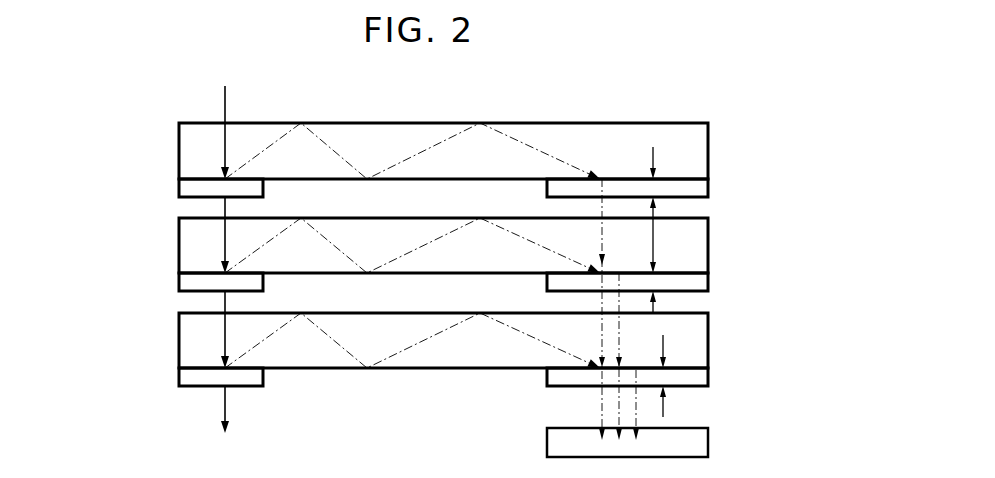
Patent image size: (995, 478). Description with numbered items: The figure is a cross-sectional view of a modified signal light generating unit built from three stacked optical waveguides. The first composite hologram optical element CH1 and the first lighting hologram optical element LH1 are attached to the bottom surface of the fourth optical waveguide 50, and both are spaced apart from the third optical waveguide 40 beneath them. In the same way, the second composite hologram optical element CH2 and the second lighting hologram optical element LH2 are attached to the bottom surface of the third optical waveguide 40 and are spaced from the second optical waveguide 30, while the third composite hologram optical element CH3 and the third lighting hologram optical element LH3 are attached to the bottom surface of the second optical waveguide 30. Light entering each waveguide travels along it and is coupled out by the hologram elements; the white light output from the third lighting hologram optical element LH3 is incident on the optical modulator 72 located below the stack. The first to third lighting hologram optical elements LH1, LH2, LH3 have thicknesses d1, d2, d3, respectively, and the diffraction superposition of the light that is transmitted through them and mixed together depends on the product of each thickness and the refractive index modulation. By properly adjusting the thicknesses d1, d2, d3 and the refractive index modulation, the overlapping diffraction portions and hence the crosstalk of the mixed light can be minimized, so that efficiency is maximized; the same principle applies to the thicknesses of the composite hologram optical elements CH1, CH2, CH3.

The fourth optical waveguide 50 is at (190, 152).
The third optical waveguide 40 is at (190, 246).
The second optical waveguide 30 is at (190, 340).
The first composite hologram optical element CH1 is at (185, 188).
The second composite hologram optical element CH2 is at (185, 283).
The third composite hologram optical element CH3 is at (185, 378).
The first lighting hologram optical element LH1 is at (692, 189).
The second lighting hologram optical element LH2 is at (692, 283).
The third lighting hologram optical element LH3 is at (692, 377).
The optical modulator 72 is at (697, 440).
The thickness of the first lighting hologram optical element d1 is at (667, 161).
The thickness of the second lighting hologram optical element d2 is at (667, 235).
The thickness of the third lighting hologram optical element d3 is at (677, 374).